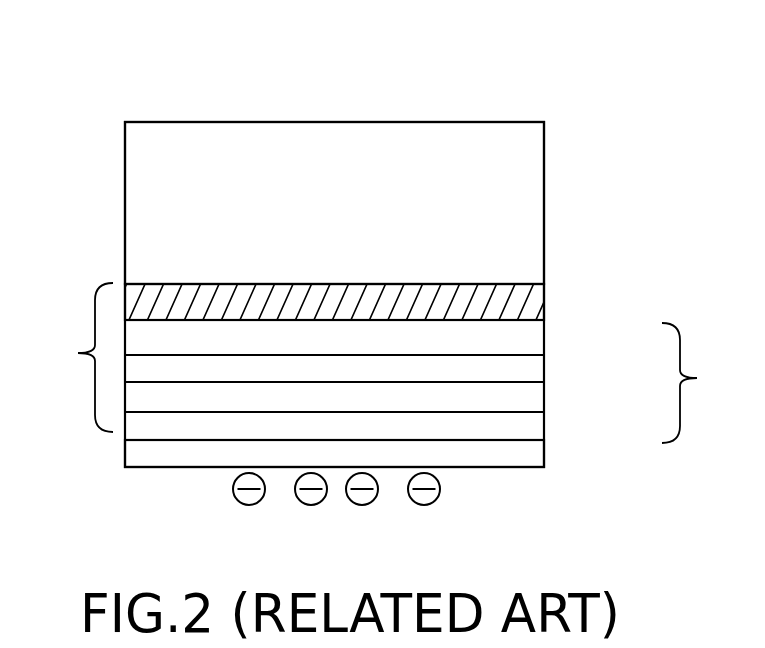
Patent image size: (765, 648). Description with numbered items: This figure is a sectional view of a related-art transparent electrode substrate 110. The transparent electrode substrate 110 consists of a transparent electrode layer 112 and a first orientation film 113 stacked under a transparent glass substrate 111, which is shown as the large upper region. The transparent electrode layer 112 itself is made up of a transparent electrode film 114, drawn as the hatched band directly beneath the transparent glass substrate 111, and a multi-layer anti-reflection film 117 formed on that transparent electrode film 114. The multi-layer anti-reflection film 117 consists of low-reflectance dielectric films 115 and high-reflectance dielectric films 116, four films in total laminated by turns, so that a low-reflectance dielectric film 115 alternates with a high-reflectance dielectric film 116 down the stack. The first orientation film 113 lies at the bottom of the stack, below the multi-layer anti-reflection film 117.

The transparent electrode substrate 110 is at (73, 62).
The transparent glass substrate 111 is at (533, 193).
The transparent electrode layer 112 is at (68, 357).
The first orientation film 113 is at (512, 454).
The transparent electrode film 114 is at (535, 299).
The low-reflectance dielectric film 115 is at (532, 343).
The high-reflectance dielectric film 116 is at (532, 375).
The multi-layer anti-reflection film 117 is at (708, 383).